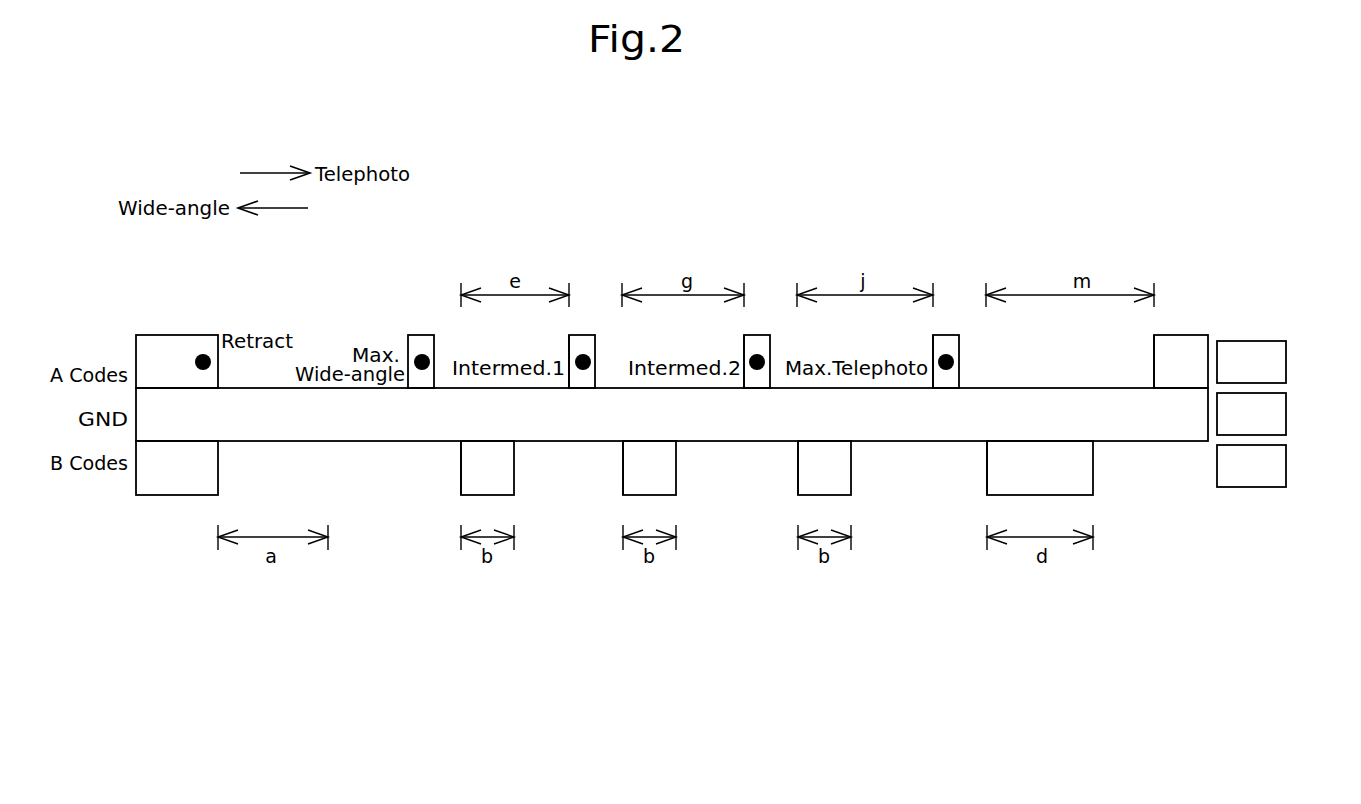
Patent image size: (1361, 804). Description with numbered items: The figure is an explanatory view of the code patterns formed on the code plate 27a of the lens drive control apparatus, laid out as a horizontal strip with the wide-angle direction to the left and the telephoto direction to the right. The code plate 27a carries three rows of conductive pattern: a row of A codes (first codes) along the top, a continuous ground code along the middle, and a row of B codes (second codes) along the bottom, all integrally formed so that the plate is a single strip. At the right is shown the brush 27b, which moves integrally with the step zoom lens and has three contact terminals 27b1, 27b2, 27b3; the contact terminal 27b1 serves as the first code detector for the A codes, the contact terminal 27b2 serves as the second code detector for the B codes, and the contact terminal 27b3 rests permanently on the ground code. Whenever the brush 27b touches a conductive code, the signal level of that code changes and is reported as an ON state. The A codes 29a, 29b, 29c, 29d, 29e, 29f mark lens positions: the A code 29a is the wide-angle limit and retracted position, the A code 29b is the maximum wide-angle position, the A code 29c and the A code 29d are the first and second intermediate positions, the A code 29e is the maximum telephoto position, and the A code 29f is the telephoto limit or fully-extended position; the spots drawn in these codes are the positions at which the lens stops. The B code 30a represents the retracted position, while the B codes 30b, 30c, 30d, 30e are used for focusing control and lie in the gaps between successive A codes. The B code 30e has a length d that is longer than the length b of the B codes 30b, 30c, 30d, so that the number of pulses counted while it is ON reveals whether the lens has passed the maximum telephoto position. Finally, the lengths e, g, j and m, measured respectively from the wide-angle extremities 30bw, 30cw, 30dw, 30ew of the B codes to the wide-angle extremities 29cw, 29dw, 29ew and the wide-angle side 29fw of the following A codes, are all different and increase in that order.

The code plate 27a is at (832, 226).
The brush 27b is at (1251, 414).
The contact terminal 27b1 is at (1245, 353).
The contact terminal 27b2 is at (1250, 475).
The contact terminal 27b3 is at (1235, 420).
The A code 29a is at (171, 354).
The A code 29b is at (418, 336).
The A code 29c is at (592, 335).
The wide-angle extremity 29cw is at (568, 353).
The A code 29d is at (767, 335).
The wide-angle extremity 29dw is at (743, 353).
The A code 29e is at (952, 335).
The wide-angle extremity 29ew is at (932, 353).
The A code 29f is at (1180, 335).
The wide-angle side 29fw is at (1152, 353).
The B code 30a is at (165, 475).
The B code 30b is at (503, 465).
The wide-angle extremity 30bw is at (461, 480).
The B code 30c is at (665, 465).
The wide-angle extremity 30cw is at (623, 480).
The B code 30d is at (840, 465).
The wide-angle extremity 30dw is at (798, 480).
The B code 30e is at (1087, 465).
The wide-angle extremity 30ew is at (987, 480).